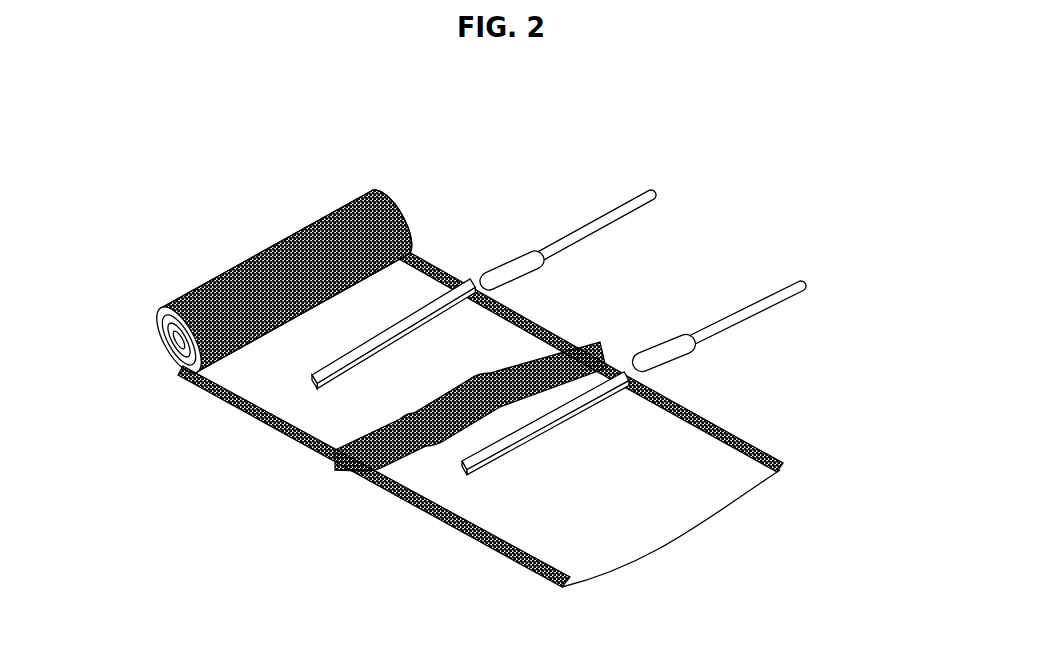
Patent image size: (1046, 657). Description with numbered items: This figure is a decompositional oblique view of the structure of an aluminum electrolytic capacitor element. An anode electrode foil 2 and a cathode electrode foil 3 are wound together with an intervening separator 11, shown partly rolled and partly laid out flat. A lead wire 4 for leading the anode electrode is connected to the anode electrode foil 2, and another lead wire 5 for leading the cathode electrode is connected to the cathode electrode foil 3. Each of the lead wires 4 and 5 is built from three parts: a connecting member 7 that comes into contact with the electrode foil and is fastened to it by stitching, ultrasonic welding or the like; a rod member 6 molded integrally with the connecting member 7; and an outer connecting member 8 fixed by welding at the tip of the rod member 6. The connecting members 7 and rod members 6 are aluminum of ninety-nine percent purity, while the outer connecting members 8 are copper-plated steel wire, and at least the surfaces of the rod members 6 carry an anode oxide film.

The anode electrode foil 2 is at (338, 430).
The cathode electrode foil 3 is at (522, 522).
The lead wire 4 is at (527, 255).
The lead wire 5 is at (697, 331).
The rod member 6 is at (522, 273).
The connecting member 7 is at (465, 280).
The outer connecting member 8 is at (723, 319).
The separator 11 is at (440, 496).